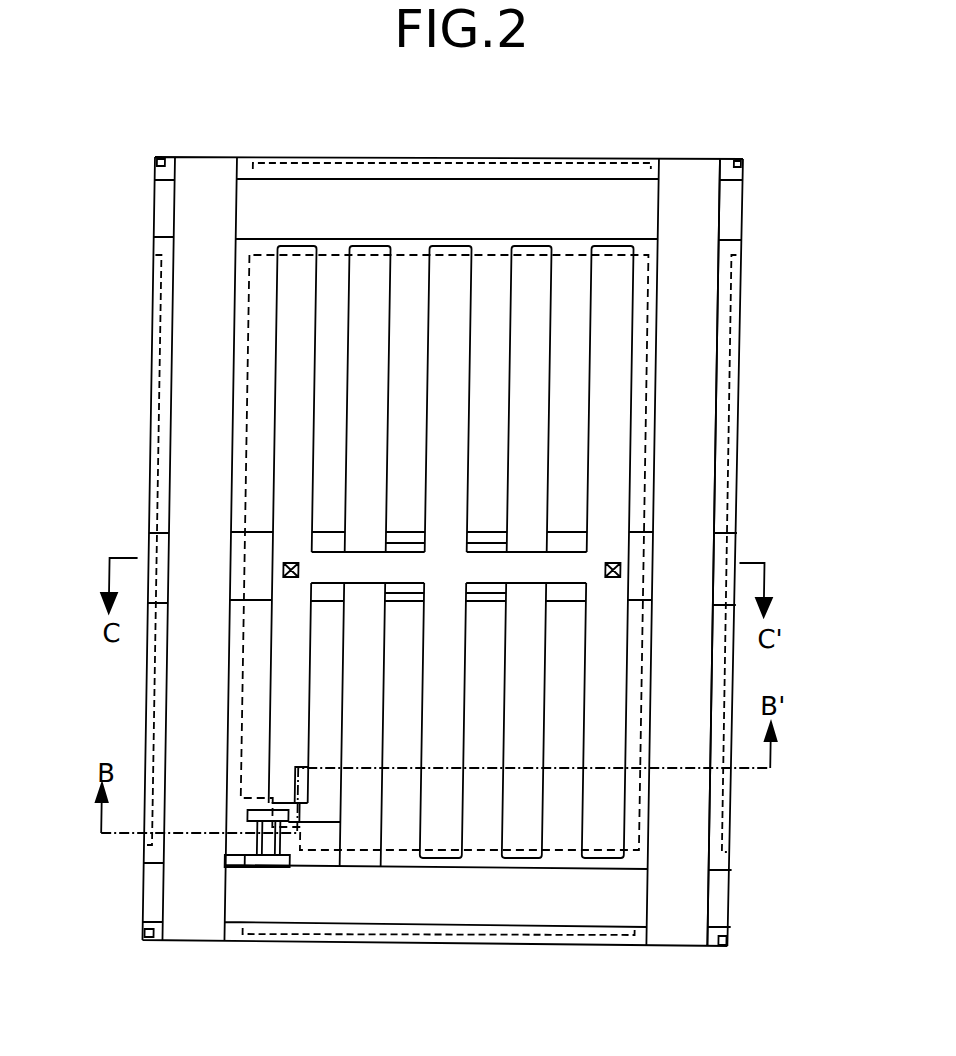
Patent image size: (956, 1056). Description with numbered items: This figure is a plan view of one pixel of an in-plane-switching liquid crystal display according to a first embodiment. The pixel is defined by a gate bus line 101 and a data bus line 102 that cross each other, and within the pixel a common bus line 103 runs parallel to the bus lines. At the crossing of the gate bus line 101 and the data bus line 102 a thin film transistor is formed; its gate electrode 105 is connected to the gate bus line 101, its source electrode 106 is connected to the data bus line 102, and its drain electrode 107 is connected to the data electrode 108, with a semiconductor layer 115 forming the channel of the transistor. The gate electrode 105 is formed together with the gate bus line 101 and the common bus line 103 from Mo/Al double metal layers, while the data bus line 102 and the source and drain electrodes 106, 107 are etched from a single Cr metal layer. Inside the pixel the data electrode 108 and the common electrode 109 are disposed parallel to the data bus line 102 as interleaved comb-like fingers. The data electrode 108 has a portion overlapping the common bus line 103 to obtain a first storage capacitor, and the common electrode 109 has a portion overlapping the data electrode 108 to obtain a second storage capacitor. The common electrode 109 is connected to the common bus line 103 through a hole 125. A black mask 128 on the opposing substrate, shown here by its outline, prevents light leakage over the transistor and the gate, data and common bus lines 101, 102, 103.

The gate bus line 101 is at (727, 902).
The data bus line 102 is at (680, 930).
The common bus line 103 is at (728, 542).
The gate electrode 105 is at (283, 870).
The source electrode 106 is at (244, 846).
The drain electrode 107 is at (303, 845).
The data electrode 108 is at (534, 840).
The common electrode 109 is at (454, 838).
The semiconductor layer 115 is at (260, 812).
The hole 125 is at (290, 569).
The black mask 128 is at (730, 806).